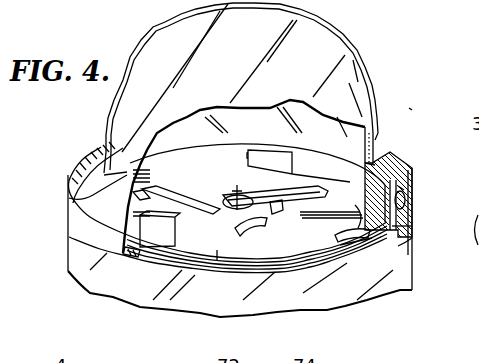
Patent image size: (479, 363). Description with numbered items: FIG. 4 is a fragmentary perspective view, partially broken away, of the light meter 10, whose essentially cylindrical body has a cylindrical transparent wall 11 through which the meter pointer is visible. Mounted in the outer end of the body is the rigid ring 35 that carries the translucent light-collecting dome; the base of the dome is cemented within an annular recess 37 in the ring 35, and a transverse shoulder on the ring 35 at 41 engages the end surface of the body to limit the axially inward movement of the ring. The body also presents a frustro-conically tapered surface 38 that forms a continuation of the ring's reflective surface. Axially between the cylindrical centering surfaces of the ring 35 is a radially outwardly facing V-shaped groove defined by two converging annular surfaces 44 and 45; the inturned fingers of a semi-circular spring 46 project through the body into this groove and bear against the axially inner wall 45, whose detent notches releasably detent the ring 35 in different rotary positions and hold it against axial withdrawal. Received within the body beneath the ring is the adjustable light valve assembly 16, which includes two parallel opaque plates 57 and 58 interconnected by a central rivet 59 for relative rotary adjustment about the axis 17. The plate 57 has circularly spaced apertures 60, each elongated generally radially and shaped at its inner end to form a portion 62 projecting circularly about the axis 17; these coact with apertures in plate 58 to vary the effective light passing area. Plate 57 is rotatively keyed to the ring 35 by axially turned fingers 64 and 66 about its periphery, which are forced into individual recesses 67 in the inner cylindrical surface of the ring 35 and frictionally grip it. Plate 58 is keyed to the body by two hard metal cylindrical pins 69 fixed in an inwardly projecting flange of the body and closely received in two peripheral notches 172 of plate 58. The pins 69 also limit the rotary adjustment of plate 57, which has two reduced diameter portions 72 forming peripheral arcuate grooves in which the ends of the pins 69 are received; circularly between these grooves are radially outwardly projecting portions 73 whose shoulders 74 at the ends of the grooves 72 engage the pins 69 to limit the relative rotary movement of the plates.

The light meter 10 is at (418, 110).
The cylindrical transparent wall 11 is at (303, 292).
The adjustable light valve assembly 16 is at (286, 236).
The axis 17 is at (240, 186).
The rigid ring 35 is at (387, 153).
The annular recess 37 is at (366, 152).
The frustro-conically tapered surface 38 is at (407, 176).
The shoulder 41 is at (403, 162).
The annular surface 44 is at (417, 188).
The annular surface 45 is at (322, 44).
The spring 46 is at (417, 201).
The valve plate 57 is at (320, 238).
The valve plate 58 is at (255, 266).
The central rivet 59 is at (231, 189).
The apertures 60 is at (250, 234).
The circularly projecting portions 62 is at (268, 213).
The axially turned finger 64 is at (167, 237).
The axially turned finger 66 is at (283, 162).
The recesses 67 is at (250, 158).
The cylindrical pins 69 is at (415, 224).
The reduced diameter portions 72 is at (203, 250).
The radially outwardly projecting portions 73 is at (313, 249).
The shoulders 74 is at (347, 247).
The peripheral notches 172 is at (357, 223).